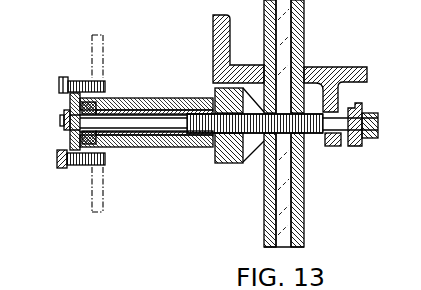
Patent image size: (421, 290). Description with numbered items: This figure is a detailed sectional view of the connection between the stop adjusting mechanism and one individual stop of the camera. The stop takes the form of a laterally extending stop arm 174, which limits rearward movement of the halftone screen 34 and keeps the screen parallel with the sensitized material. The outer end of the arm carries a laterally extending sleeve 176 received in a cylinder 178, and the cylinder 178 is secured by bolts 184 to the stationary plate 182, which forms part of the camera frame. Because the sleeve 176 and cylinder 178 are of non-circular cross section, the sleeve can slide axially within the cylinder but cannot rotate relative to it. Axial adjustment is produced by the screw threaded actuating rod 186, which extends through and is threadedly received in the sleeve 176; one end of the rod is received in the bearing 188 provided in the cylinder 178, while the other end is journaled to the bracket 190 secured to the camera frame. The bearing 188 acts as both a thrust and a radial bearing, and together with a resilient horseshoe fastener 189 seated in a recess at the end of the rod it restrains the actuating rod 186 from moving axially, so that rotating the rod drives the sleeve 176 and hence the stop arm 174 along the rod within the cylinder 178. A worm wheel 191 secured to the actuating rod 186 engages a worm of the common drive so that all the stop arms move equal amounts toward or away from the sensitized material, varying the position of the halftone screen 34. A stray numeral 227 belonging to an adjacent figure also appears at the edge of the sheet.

The halftone screen 34 is at (288, 211).
The stop arm 174 is at (231, 163).
The sleeve 176 is at (152, 148).
The cylinder 178 is at (116, 150).
The stationary plate 182 is at (78, 165).
The bolts 184 is at (58, 160).
The screw threaded actuating rod 186 is at (190, 150).
The bearing 188 is at (69, 103).
The horseshoe fastener 189 is at (64, 125).
The bracket 190 is at (345, 95).
The worm wheel 191 is at (358, 150).
The element 227 is at (79, 289).